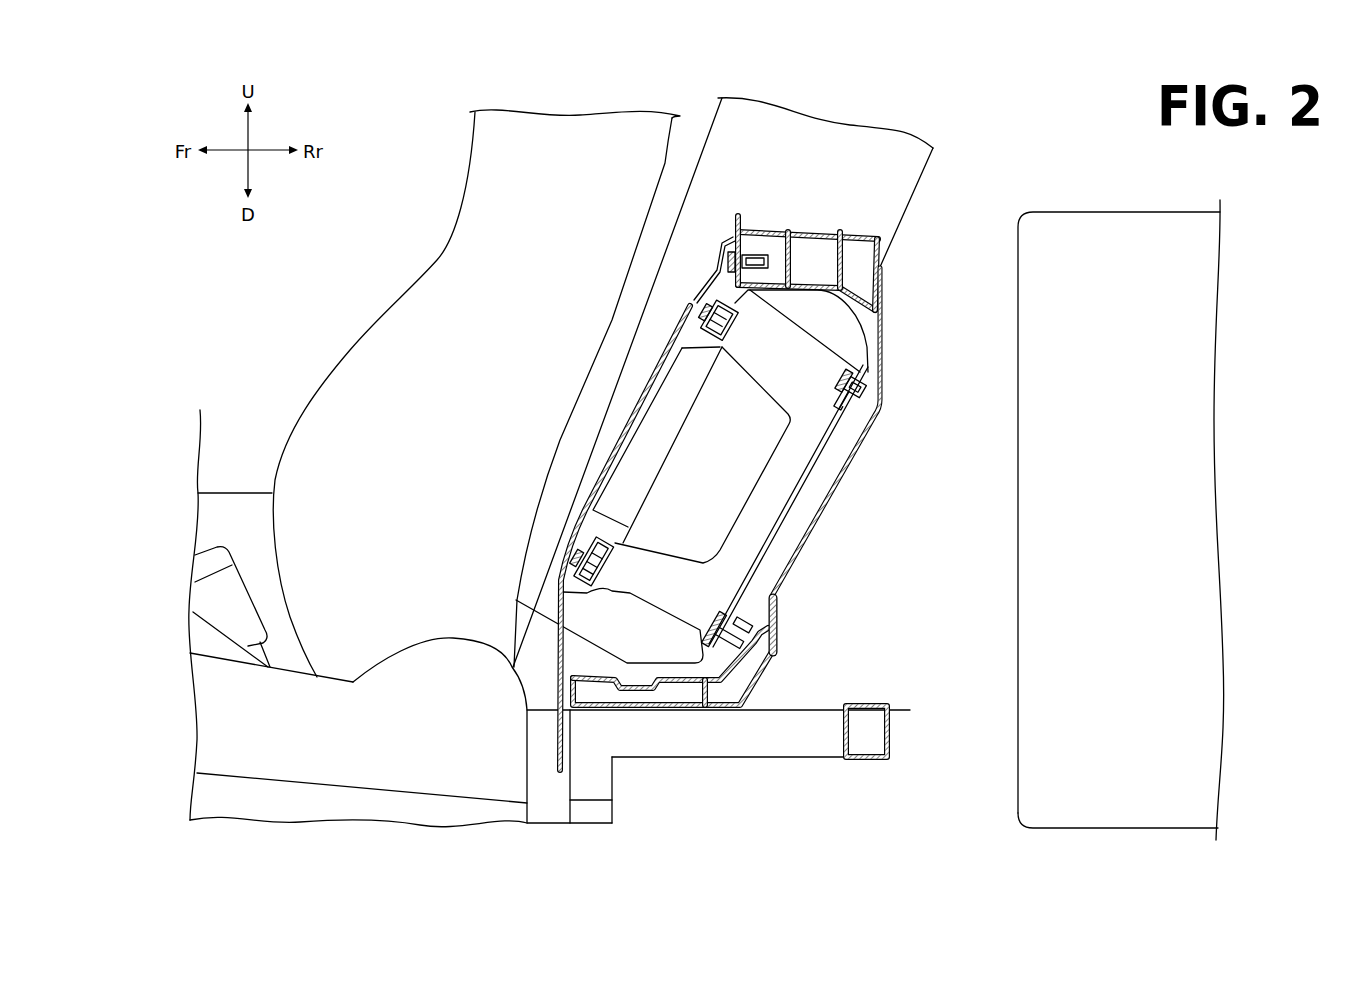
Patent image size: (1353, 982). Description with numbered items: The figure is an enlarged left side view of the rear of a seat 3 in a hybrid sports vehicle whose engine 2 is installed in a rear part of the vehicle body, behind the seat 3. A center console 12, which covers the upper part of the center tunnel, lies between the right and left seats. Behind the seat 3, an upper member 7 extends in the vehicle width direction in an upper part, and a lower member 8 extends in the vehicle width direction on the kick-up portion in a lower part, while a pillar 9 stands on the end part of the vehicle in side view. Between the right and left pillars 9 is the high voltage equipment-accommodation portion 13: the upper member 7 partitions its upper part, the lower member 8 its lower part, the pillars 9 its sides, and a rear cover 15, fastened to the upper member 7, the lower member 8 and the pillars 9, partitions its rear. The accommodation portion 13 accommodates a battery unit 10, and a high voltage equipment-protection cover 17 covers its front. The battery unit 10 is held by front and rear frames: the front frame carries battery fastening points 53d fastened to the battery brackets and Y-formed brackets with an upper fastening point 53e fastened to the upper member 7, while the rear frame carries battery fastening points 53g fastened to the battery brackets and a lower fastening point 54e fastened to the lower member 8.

The engine 2 is at (1120, 208).
The seat 3 is at (388, 355).
The upper member 7 is at (817, 230).
The lower member 8 is at (758, 681).
The pillar 9 is at (785, 140).
The battery unit 10 is at (833, 430).
The center console 12 is at (237, 493).
The high voltage equipment-accommodation portion 13 is at (838, 487).
The rear cover 15 is at (793, 563).
The high voltage equipment-protection cover 17 is at (652, 380).
The battery fastening point 53d is at (702, 323).
The upper fastening point 53e is at (721, 257).
The battery fastening point 53g is at (860, 365).
The lower fastening point 54e is at (750, 608).